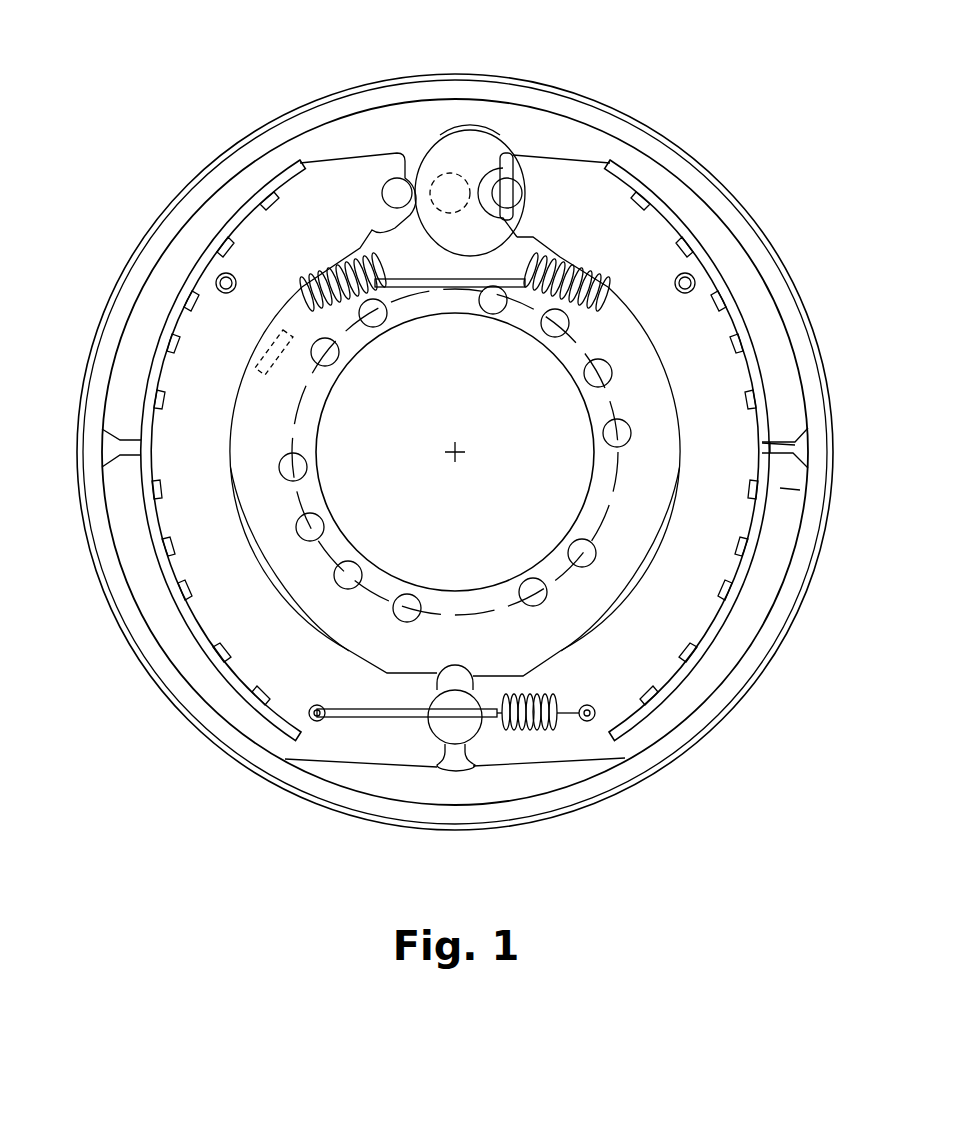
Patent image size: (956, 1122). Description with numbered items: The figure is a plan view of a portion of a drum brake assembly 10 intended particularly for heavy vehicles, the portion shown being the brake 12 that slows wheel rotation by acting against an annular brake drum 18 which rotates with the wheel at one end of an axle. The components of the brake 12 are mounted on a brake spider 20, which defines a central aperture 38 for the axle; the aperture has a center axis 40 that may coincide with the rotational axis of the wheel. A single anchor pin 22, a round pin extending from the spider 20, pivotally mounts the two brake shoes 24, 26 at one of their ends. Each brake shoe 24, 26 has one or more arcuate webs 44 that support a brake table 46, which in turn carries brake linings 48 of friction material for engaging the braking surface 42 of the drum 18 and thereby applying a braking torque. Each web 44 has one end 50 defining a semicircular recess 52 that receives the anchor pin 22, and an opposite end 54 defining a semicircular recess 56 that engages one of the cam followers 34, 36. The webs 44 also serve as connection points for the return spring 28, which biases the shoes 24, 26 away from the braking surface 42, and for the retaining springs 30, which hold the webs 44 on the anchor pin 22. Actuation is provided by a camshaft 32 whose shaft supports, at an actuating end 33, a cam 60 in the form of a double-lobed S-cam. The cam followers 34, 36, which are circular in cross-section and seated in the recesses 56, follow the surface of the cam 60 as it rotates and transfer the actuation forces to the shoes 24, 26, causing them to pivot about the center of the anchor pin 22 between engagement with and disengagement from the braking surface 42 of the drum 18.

The drum brake assembly 10 is at (160, 142).
The brake 12 is at (128, 222).
The annular brake drum 18 is at (652, 752).
The brake spider 20 is at (617, 553).
The anchor pin 22 is at (443, 731).
The brake shoe 24 is at (180, 517).
The brake shoe 26 is at (723, 523).
The return spring 28 is at (567, 288).
The retaining spring 30 is at (552, 735).
The camshaft 32 is at (447, 190).
The actuating end 33 is at (490, 133).
The cam follower 34 is at (397, 197).
The cam follower 36 is at (507, 200).
The central aperture 38 is at (541, 533).
The center axis 40 is at (458, 455).
The braking surface 42 is at (607, 752).
The web 44 is at (703, 378).
The brake table 46 is at (795, 445).
The brake lining 48 is at (800, 490).
The web end 50 is at (505, 742).
The semicircular recess 52 is at (472, 748).
The web end 54 is at (550, 203).
The semicircular recess 56 is at (508, 196).
The cam 60 is at (460, 143).